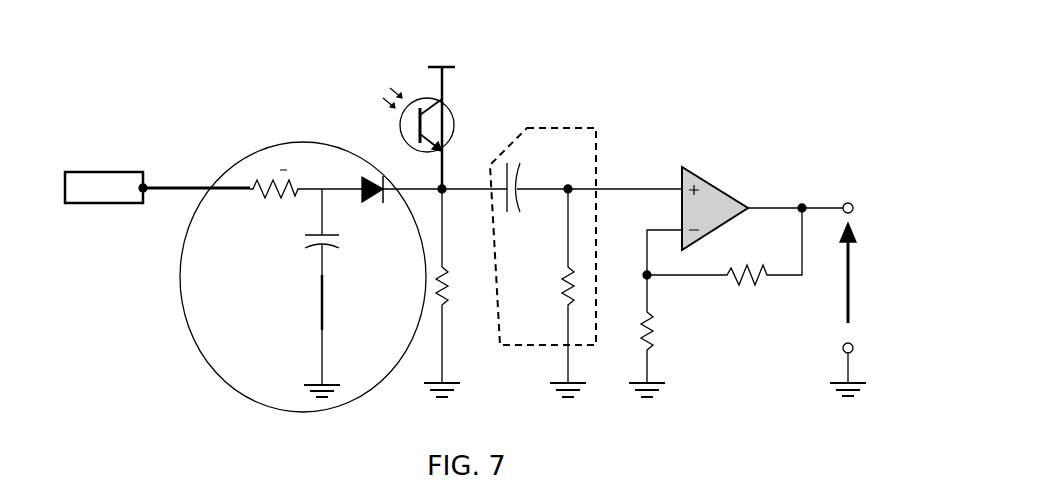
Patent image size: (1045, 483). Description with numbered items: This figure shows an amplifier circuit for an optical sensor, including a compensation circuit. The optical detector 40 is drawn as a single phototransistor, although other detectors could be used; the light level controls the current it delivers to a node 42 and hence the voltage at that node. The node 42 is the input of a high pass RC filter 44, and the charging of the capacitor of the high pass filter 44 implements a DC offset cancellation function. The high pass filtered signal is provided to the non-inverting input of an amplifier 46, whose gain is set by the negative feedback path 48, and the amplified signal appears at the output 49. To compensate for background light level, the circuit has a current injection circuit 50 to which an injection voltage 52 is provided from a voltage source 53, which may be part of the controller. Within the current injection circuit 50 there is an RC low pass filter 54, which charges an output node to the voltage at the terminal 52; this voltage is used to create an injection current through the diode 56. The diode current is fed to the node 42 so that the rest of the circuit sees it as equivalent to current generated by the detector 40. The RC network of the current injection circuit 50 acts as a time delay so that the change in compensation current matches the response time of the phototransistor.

The detector 40 is at (444, 108).
The node 42 is at (470, 171).
The high pass RC filter 44 is at (597, 158).
The amplifier 46 is at (728, 190).
The negative feedback path 48 is at (740, 284).
The output of the amplifier 49 is at (850, 275).
The current injection circuit 50 is at (237, 163).
The injection voltage 52 is at (145, 172).
The voltage source 53 is at (88, 203).
The RC low pass filter 54 is at (286, 252).
The diode 56 is at (373, 203).